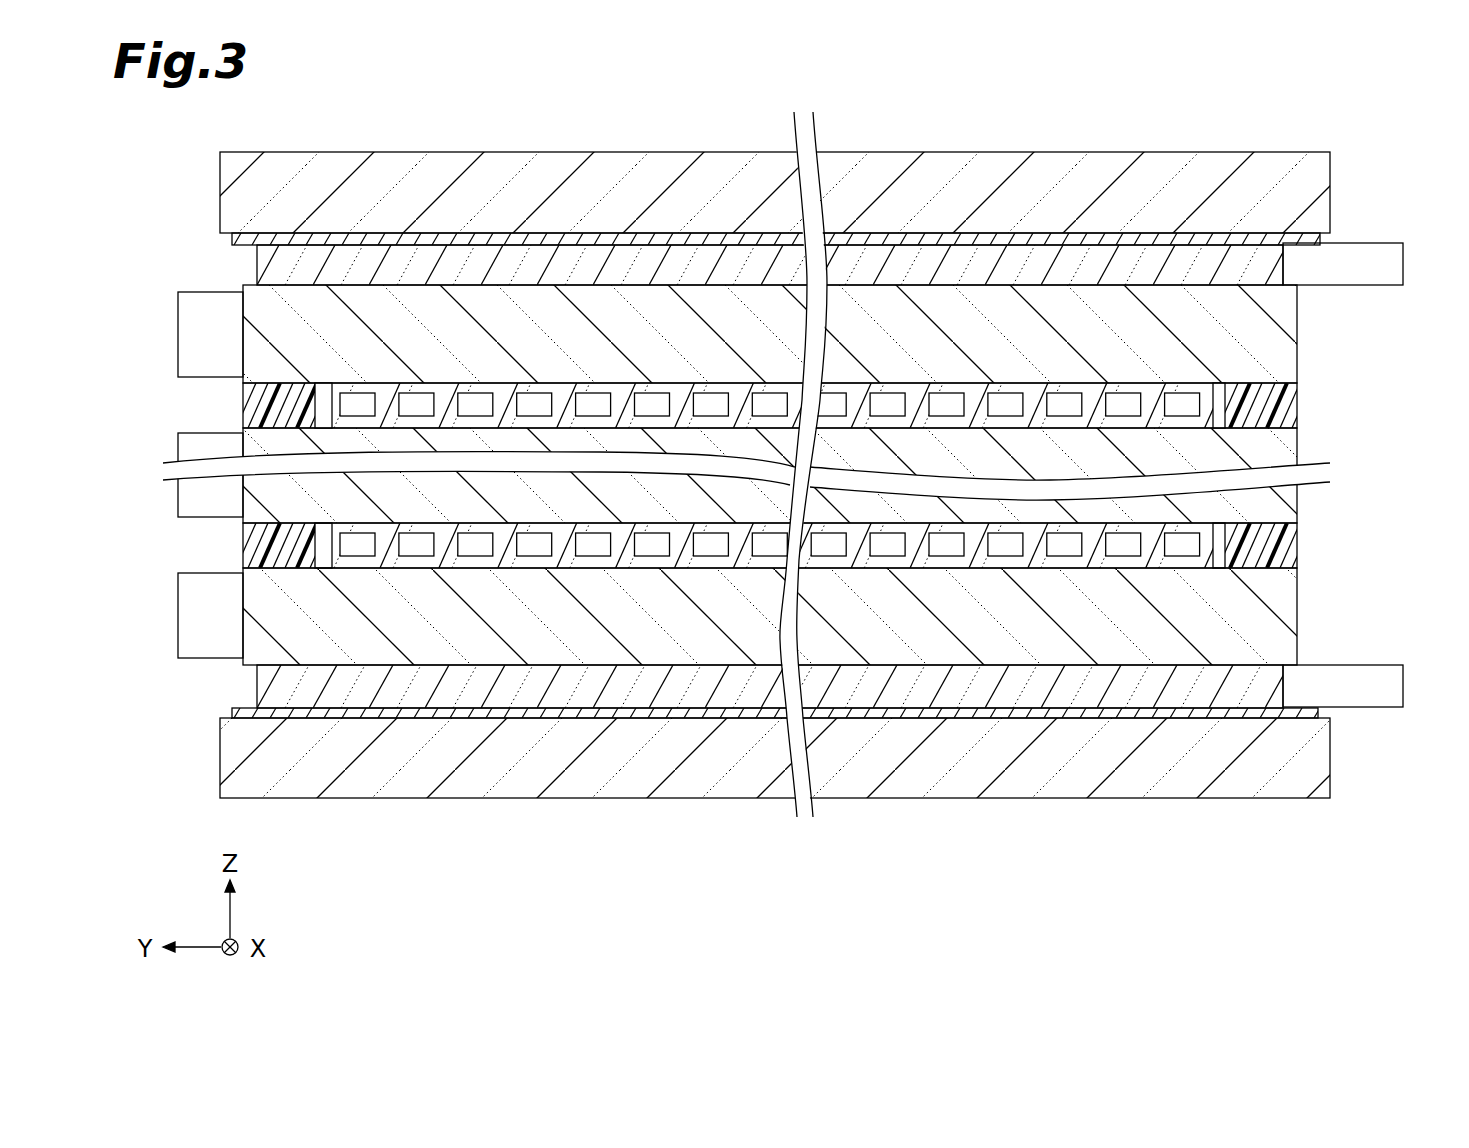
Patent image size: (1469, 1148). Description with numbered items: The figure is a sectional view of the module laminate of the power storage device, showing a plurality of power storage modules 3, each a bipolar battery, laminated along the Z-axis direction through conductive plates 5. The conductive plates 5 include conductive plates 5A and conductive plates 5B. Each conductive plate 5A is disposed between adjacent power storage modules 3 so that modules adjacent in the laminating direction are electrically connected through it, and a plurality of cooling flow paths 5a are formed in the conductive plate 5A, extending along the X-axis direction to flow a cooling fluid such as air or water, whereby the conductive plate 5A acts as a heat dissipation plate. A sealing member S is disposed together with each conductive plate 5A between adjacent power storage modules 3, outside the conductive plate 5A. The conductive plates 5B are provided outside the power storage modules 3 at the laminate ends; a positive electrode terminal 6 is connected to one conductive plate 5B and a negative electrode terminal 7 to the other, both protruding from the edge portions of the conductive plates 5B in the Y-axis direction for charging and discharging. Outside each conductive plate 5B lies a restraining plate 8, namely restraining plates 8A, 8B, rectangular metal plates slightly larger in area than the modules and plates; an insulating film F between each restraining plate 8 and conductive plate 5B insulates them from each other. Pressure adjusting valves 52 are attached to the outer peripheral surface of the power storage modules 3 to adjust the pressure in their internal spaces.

The power storage module 3 is at (1297, 346).
The conductive plate 5 is at (777, 477).
The conductive plate 5A is at (777, 473).
The conductive plate 5B is at (1212, 258).
The cooling flow path 5a is at (312, 400).
The positive electrode terminal 6 is at (1403, 686).
The negative electrode terminal 7 is at (1403, 263).
The restraining plate 8 is at (775, 478).
The restraining plate 8A is at (678, 175).
The restraining plate 8B is at (685, 776).
The pressure adjusting valve 52 is at (178, 336).
The insulating film F is at (1141, 240).
The sealing member S is at (243, 410).